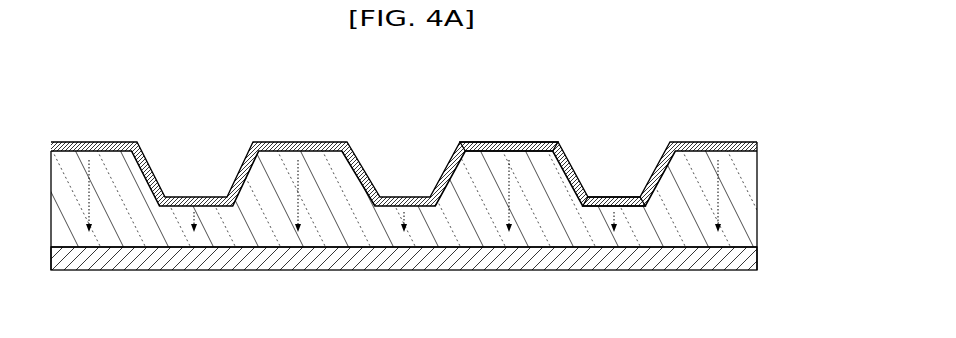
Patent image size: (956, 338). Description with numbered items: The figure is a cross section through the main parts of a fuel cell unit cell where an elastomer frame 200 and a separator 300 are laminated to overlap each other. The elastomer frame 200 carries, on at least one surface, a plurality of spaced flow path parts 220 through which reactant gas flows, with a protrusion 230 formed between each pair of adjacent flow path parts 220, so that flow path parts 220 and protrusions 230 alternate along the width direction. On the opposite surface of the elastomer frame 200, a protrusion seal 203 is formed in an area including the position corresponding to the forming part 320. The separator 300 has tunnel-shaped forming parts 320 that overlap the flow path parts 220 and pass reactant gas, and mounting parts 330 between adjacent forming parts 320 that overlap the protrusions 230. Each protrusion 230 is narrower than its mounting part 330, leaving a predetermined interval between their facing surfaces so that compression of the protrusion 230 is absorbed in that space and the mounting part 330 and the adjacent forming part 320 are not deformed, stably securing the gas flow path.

The elastomer frame 200 is at (757, 197).
The protrusion seal 203 is at (757, 258).
The flow path part 220 is at (647, 197).
The protrusion 230 is at (535, 180).
The separator 300 is at (757, 147).
The forming part 320 is at (608, 197).
The mounting part 330 is at (510, 143).